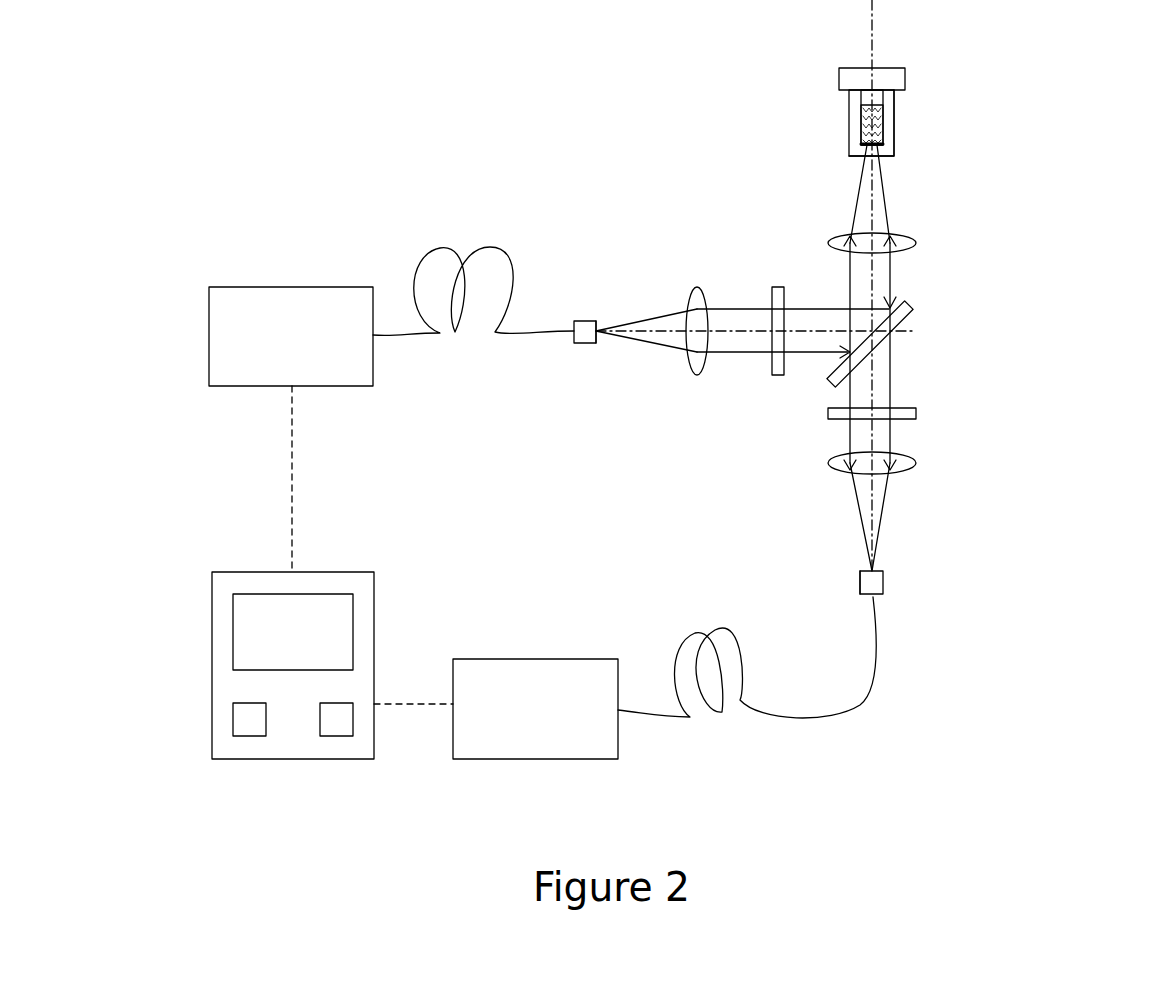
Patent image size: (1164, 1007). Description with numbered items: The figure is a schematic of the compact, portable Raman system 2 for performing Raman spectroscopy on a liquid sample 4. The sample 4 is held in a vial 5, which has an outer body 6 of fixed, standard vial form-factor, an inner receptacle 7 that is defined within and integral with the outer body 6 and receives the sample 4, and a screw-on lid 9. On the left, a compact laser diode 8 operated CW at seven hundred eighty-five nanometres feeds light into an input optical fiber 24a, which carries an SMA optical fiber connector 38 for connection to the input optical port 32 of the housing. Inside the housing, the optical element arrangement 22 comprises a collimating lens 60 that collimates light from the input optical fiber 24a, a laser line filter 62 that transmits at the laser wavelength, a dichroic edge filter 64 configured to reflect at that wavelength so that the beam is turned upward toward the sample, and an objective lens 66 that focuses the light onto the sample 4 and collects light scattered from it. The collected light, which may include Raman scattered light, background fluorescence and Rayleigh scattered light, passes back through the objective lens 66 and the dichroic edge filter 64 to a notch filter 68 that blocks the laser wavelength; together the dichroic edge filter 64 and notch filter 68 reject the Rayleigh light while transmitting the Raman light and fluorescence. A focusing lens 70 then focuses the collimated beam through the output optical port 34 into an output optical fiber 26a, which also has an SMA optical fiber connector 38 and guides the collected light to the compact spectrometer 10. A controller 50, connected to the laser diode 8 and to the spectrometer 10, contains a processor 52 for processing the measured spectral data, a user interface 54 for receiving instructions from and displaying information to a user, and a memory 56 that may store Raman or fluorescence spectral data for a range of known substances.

The Raman system 2 is at (1040, 208).
The liquid sample 4 is at (876, 128).
The vial 5 is at (818, 122).
The outer body 6 is at (895, 108).
The inner receptacle 7 is at (861, 103).
The screw-on lid 9 is at (905, 76).
The laser diode 8 is at (276, 287).
The input optical fiber 24a is at (490, 248).
The input optical port 32 is at (595, 320).
The SMA optical fiber connector 38 is at (858, 583).
The collimating lens 60 is at (700, 288).
The laser line filter 62 is at (781, 287).
The dichroic edge filter 64 is at (907, 310).
The objective lens 66 is at (905, 240).
The notch filter 68 is at (908, 416).
The focusing lens 70 is at (905, 468).
The output optical port 34 is at (886, 570).
The output optical fiber 26a is at (828, 722).
The spectrometer 10 is at (536, 659).
The optical element arrangement 22 is at (745, 465).
The controller 50 is at (244, 572).
The user interface 54 is at (316, 619).
The processor 52 is at (251, 720).
The memory 56 is at (336, 722).